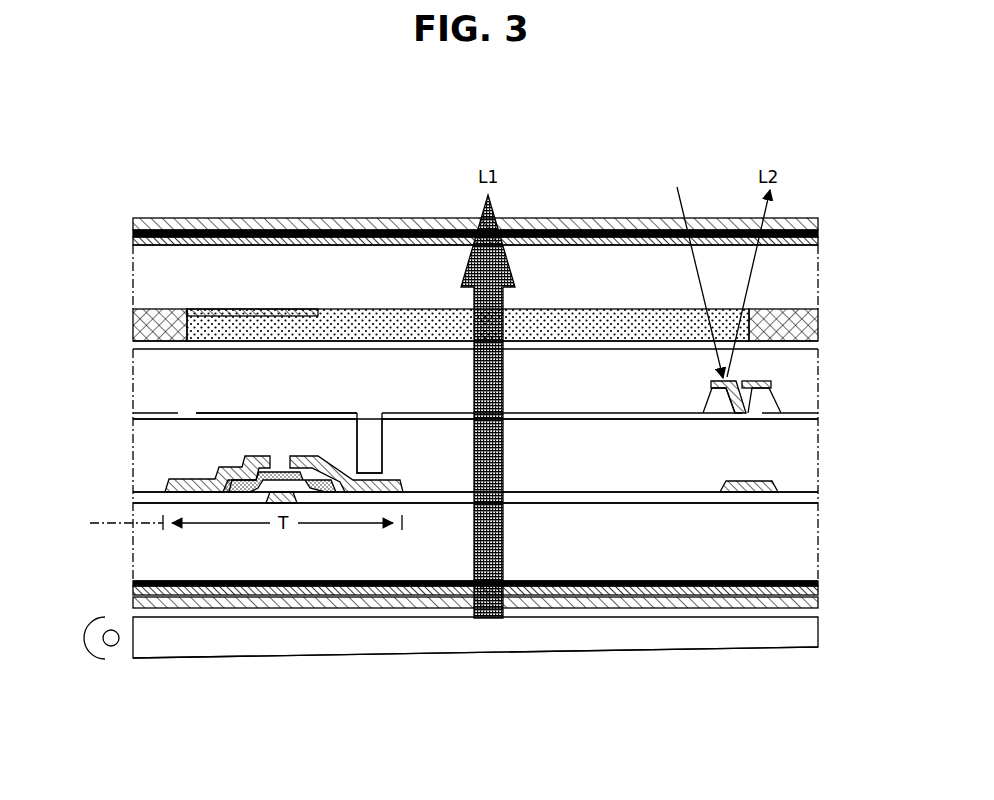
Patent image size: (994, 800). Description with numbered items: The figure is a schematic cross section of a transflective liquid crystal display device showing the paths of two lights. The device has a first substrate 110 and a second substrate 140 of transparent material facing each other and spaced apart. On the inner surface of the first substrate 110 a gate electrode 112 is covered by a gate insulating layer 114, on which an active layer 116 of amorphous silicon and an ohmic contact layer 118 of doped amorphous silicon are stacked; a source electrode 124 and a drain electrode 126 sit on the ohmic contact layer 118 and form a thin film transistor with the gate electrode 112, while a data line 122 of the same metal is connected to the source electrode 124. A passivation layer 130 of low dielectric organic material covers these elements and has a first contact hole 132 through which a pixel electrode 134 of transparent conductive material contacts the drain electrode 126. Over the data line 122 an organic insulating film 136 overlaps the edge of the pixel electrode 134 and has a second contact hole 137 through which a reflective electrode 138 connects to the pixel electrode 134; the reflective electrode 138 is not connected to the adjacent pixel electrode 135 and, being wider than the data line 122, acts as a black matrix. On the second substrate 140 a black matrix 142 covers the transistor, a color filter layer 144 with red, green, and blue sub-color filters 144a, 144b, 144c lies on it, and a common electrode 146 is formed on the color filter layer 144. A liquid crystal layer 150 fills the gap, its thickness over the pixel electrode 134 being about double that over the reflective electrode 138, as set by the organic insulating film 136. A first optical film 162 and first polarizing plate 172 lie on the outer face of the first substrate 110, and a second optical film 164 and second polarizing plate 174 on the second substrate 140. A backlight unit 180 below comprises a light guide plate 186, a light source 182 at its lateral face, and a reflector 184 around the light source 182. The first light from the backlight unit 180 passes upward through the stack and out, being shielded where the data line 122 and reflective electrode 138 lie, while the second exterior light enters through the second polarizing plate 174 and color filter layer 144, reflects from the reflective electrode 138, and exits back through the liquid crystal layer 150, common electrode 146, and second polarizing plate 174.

The first substrate 110 is at (675, 573).
The gate electrode 112 is at (276, 503).
The gate insulating layer 114 is at (628, 497).
The active layer 116 is at (282, 470).
The ohmic contact layer 118 is at (284, 427).
The data line 122 is at (748, 494).
The source electrode 124 is at (255, 455).
The drain electrode 126 is at (345, 470).
The passivation layer 130 is at (587, 432).
The first contact hole 132 is at (371, 410).
The pixel electrode 134 is at (543, 413).
The adjacent pixel electrode 135 is at (805, 417).
The organic insulating film 136 is at (712, 398).
The second contact hole 137 is at (734, 394).
The reflective electrode 138 is at (765, 383).
The second substrate 140 is at (318, 262).
The black matrix 142 is at (234, 312).
The color filter layer 144 is at (482, 223).
The red sub-color filter 144a is at (152, 315).
The green sub-color filter 144b is at (413, 320).
The blue sub-color filter 144c is at (790, 260).
The common electrode 146 is at (578, 345).
The liquid crystal layer 150 is at (803, 384).
The first optical film 162 is at (818, 588).
The second optical film 164 is at (818, 240).
The first polarizing plate 172 is at (818, 603).
The second polarizing plate 174 is at (818, 224).
The backlight unit 180 is at (826, 617).
The light source 182 is at (111, 628).
The reflector 184 is at (101, 637).
The light guide plate 186 is at (393, 643).